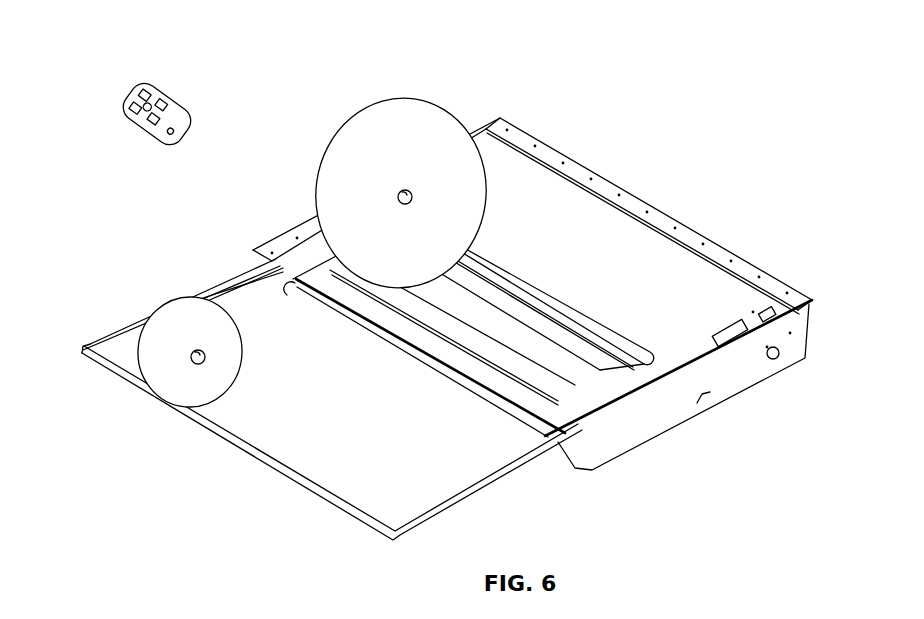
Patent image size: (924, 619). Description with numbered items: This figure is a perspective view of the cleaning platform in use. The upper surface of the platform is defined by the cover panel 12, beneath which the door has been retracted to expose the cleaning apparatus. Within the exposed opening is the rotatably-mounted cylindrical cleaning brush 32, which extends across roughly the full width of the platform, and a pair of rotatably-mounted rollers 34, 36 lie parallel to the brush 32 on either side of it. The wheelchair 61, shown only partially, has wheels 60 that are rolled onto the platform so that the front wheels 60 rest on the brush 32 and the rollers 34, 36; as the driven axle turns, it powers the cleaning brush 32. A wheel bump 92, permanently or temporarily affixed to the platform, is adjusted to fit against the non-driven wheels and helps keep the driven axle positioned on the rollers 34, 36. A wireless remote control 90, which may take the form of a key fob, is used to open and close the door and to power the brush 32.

The cover panel 12 is at (637, 273).
The cleaning brush 32 is at (582, 372).
The roller 34 is at (612, 362).
The roller 36 is at (550, 387).
The wheels 60 is at (368, 113).
The wheelchair 61 is at (275, 278).
The remote control 90 is at (125, 84).
The wheel bump 92 is at (321, 497).